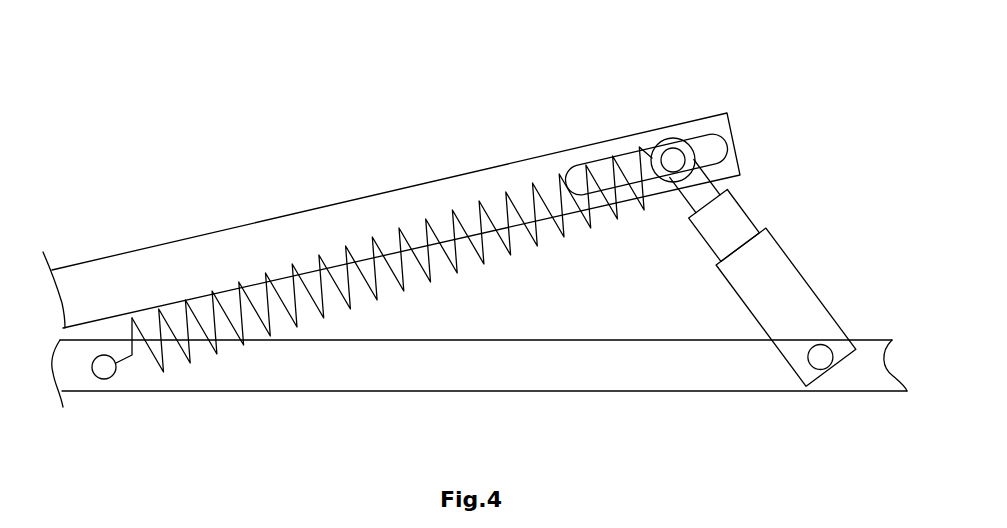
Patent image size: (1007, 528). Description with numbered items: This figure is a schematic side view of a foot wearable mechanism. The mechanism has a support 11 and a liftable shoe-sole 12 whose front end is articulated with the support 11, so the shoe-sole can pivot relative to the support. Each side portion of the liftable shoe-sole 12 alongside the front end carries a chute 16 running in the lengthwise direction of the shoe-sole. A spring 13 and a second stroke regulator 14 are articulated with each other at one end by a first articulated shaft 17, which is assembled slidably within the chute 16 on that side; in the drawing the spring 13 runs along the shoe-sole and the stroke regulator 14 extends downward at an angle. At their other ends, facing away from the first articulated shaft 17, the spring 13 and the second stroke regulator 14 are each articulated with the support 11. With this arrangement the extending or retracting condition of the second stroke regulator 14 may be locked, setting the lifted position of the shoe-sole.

The support 11 is at (457, 370).
The liftable shoe-sole 12 is at (311, 232).
The spring 13 is at (478, 256).
The second stroke regulator 14 is at (782, 276).
The chute 16 is at (706, 150).
The first articulated shaft 17 is at (673, 160).